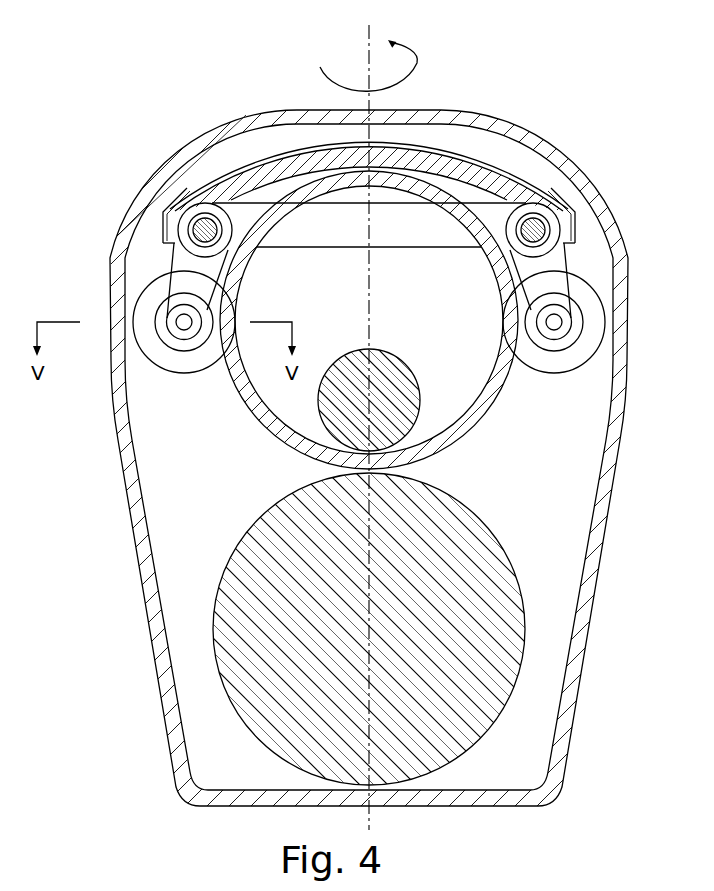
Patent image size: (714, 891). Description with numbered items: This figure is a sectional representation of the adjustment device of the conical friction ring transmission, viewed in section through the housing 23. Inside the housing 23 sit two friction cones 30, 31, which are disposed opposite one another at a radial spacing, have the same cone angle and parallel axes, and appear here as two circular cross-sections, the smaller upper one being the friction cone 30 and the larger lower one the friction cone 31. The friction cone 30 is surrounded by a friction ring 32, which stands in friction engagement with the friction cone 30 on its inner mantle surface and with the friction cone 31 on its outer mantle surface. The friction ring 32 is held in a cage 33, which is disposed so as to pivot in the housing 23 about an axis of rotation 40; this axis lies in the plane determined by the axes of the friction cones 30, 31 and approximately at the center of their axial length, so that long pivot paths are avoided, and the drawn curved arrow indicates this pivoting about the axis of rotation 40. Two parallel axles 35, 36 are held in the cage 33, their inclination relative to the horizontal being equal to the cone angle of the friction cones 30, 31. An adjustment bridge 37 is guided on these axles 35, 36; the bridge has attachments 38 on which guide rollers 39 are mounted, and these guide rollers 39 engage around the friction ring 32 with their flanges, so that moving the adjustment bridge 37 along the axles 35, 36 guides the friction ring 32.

The housing 23 is at (598, 498).
The friction cone 30 is at (383, 372).
The friction cone 31 is at (238, 652).
The friction ring 32 is at (503, 390).
The cage 33 is at (520, 170).
The axle 35 is at (205, 227).
The axle 36 is at (550, 225).
The adjustment bridge 37 is at (301, 157).
The attachment 38 is at (172, 248).
The guide roller 39 is at (152, 340).
The axis of rotation 40 is at (368, 33).